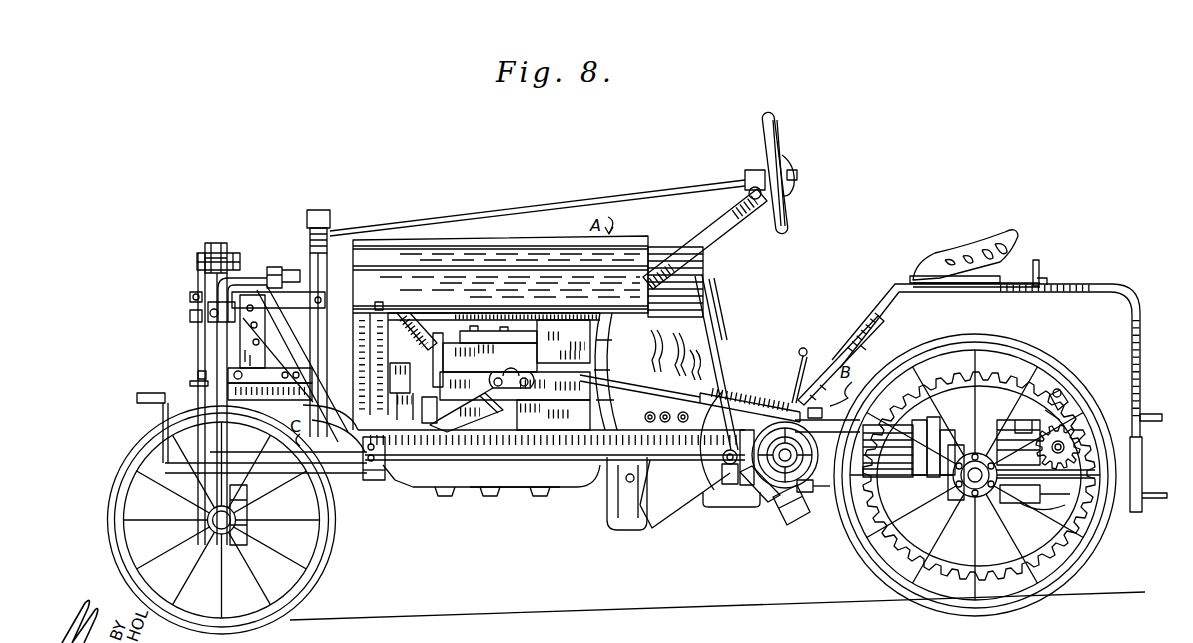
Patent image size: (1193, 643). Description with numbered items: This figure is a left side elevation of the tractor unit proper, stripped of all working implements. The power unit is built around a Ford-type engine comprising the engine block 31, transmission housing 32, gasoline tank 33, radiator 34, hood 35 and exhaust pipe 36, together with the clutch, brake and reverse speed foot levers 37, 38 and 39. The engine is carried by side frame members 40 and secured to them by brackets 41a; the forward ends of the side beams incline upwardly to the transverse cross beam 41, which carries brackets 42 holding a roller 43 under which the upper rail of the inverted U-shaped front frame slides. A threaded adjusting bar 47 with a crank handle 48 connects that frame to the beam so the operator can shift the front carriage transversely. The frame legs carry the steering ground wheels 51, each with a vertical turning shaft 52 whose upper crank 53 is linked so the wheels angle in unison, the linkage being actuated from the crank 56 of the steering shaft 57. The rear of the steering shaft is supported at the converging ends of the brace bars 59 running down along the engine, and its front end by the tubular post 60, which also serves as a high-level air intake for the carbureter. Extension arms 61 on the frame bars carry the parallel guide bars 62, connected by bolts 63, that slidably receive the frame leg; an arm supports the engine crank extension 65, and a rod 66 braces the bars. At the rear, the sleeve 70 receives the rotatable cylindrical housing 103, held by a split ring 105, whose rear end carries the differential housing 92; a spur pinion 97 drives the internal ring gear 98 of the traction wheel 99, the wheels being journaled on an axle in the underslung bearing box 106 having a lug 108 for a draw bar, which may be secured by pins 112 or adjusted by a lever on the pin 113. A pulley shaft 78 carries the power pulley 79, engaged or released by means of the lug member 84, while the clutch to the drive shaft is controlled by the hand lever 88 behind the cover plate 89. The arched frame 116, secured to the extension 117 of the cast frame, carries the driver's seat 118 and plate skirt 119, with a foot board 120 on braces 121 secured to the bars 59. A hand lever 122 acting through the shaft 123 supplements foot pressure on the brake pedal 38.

The engine block 31 is at (530, 432).
The transmission housing 32 is at (676, 490).
The gasoline tank 33 is at (690, 268).
The radiator 34 is at (383, 305).
The hood 35 is at (505, 244).
The exhaust pipe 36 is at (797, 505).
The clutch foot lever 37 is at (672, 341).
The brake pedal 38 is at (655, 333).
The reverse speed foot lever 39 is at (690, 363).
The side frame members 40 is at (458, 445).
The transverse cross beam 41 is at (230, 313).
The brackets 41a is at (633, 470).
The brackets 42 is at (240, 256).
The roller 43 is at (218, 243).
The threaded adjusting bar 47 is at (190, 296).
The handle 48 is at (190, 314).
The ground wheels 51 is at (318, 562).
The vertical turning shaft 52 is at (262, 512).
The cranks 53 is at (248, 277).
The crank 56 is at (777, 146).
The steering shaft 57 is at (425, 223).
The brace bars 59 is at (716, 222).
The tubular post 60 is at (318, 212).
The extension arms 61 is at (266, 398).
The guide bars 62 is at (190, 384).
The bolts or rivets 63 is at (198, 375).
The engine crank extension 65 is at (148, 403).
The rod 66 is at (263, 378).
The sleeve 70 is at (893, 467).
The shaft 78 is at (765, 495).
The power pulley 79 is at (776, 490).
The lug member 84 is at (792, 488).
The hand lever 88 is at (803, 348).
The cover plate 89 is at (827, 411).
The differential housing 92 is at (1057, 390).
The spur pinion 97 is at (1080, 412).
The internal ring gear 98 is at (950, 585).
The traction wheel 99 is at (996, 612).
The cylindrical housing 103 is at (988, 425).
The split ring 105 is at (958, 440).
The bearing box 106 is at (1030, 505).
The lug 108 is at (968, 505).
The pins 112 is at (1138, 512).
The pin 113 is at (1160, 412).
The frame 116 is at (1092, 290).
The extension 117 is at (830, 330).
The driver's seat 118 is at (1017, 236).
The plate skirt 119 is at (1002, 283).
The foot board 120 is at (757, 398).
The braces 121 is at (646, 380).
The hand lever 122 is at (712, 313).
The shaft 123 is at (723, 460).